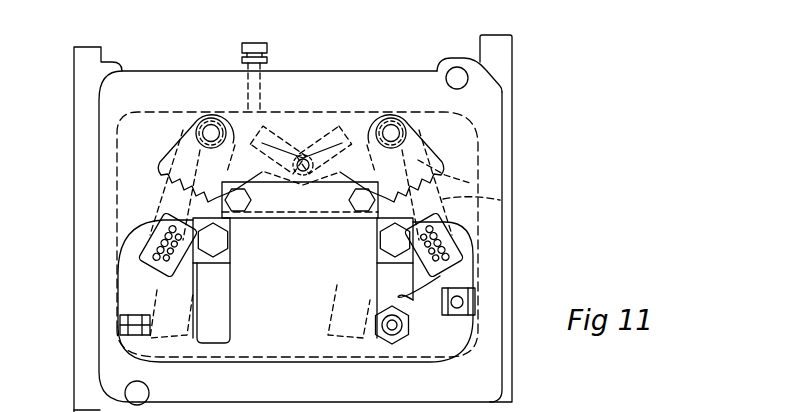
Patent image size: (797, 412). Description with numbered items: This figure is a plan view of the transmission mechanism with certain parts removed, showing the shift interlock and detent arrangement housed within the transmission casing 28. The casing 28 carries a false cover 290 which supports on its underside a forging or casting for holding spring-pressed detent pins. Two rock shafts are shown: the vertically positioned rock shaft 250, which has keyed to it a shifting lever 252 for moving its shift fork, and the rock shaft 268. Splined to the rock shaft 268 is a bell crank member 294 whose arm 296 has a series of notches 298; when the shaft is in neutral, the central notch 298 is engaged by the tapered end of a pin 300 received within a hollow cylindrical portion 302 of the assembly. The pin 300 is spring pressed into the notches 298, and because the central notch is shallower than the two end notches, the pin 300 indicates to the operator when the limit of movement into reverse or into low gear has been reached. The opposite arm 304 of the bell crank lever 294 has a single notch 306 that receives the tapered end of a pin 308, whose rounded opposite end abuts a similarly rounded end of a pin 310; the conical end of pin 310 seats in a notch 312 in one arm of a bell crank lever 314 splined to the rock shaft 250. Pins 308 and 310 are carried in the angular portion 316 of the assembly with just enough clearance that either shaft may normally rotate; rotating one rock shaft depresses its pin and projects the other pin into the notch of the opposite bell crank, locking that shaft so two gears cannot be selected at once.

The transmission casing 28 is at (73, 247).
The rock shaft 250 is at (200, 122).
The shifting lever 252 is at (230, 315).
The rock shaft 268 is at (387, 130).
The false cover 290 is at (472, 185).
The bell crank member 294 is at (343, 130).
The arm 296 is at (413, 153).
The notches 298 is at (433, 173).
The pin 300 is at (500, 200).
The hollow cylindrical portion 302 is at (460, 248).
The opposite arm 304 is at (342, 157).
The single notch 306 is at (333, 130).
The pin 308 is at (317, 153).
The pin 310 is at (282, 165).
The notch 312 is at (262, 128).
The bell crank lever 314 is at (130, 157).
The angular portion 316 is at (292, 160).